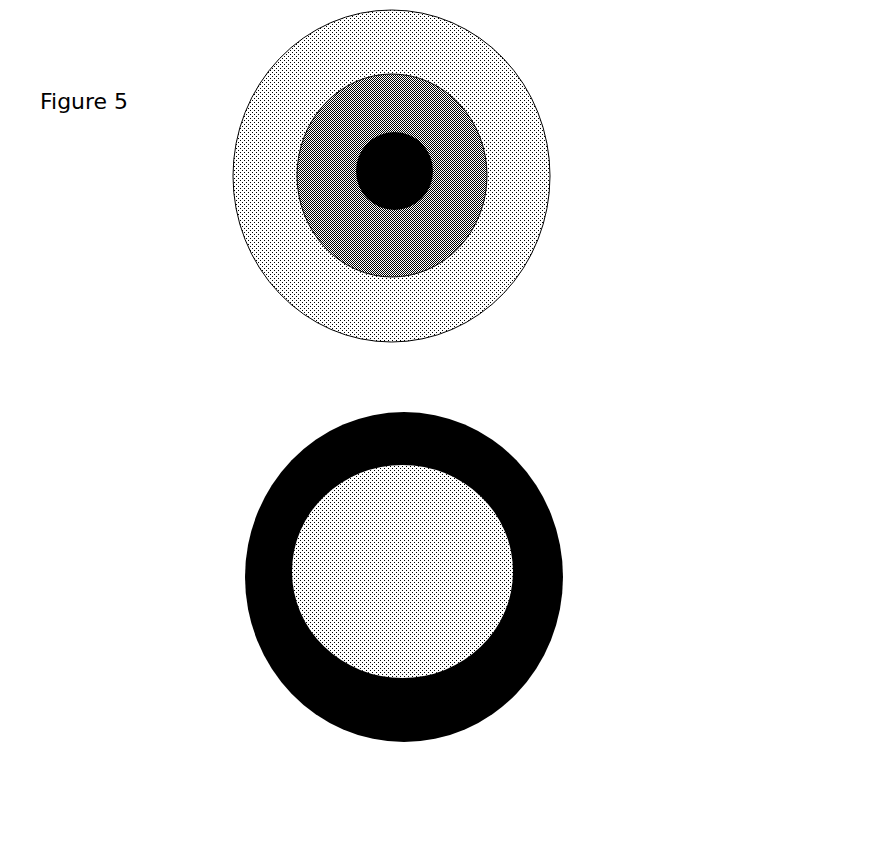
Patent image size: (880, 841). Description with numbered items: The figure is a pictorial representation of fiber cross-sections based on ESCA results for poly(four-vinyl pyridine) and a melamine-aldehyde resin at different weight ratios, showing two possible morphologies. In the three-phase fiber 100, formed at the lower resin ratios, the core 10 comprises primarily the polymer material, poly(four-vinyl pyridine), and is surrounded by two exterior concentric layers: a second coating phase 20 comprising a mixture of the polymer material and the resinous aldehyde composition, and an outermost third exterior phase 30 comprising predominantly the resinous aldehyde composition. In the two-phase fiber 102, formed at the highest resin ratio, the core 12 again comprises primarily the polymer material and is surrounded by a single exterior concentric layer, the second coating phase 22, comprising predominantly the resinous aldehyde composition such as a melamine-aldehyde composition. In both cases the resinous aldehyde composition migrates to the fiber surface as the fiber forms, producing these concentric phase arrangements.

The core 10 is at (436, 202).
The second coating phase 20 is at (466, 179).
The third exterior phase 30 is at (500, 133).
The fiber 100 is at (465, 201).
The core 12 is at (498, 594).
The second coating phase 22 is at (565, 528).
The fiber 102 is at (501, 606).